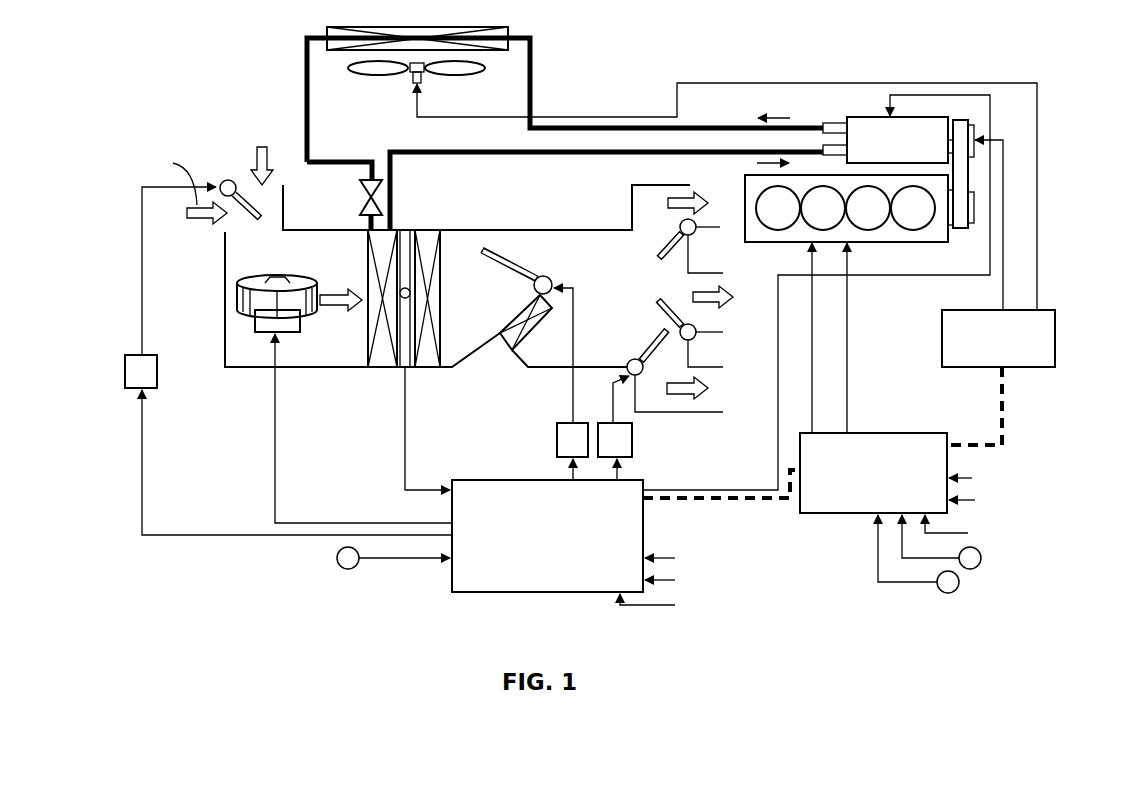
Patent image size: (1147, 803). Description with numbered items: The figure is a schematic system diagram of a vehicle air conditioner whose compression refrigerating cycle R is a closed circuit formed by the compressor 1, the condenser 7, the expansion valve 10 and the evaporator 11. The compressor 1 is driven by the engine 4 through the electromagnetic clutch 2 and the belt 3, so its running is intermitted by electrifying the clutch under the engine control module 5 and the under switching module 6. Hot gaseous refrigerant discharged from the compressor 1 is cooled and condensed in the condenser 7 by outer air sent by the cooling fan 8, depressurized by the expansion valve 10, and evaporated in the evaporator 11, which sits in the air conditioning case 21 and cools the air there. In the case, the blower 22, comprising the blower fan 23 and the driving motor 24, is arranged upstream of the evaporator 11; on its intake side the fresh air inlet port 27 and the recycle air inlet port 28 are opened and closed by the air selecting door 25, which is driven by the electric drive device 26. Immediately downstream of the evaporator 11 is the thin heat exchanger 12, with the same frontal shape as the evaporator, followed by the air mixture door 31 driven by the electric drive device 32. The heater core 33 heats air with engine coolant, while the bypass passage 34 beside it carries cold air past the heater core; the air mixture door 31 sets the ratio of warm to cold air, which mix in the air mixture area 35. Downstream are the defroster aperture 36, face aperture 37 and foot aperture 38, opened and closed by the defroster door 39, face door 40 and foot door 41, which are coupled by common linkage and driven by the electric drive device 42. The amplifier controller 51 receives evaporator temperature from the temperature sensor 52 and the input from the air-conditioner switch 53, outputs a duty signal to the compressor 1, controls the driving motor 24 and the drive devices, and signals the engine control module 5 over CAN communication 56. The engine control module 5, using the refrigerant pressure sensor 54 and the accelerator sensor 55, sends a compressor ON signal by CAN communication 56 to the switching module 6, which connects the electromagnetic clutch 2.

The compression refrigerating cycle of vehicle air conditioner R is at (541, 69).
The compressor 1 is at (873, 127).
The electromagnetic clutch 2 is at (955, 120).
The belt 3 is at (959, 228).
The engine 4 is at (866, 244).
The engine control module 5 is at (922, 440).
The under switching module 6 is at (952, 325).
The condenser 7 is at (493, 42).
The cooling fan 8 is at (385, 72).
The expansion valve 10 is at (358, 201).
The evaporator 11 is at (382, 360).
The heat exchanger 12 is at (430, 360).
The air conditioning case 21 is at (481, 230).
The blower 22 is at (244, 328).
The blower fan 23 is at (297, 283).
The driving motor 24 is at (295, 325).
The air selecting door 25 is at (242, 215).
The electric drive device 26 is at (150, 375).
The fresh air inlet port 27 is at (247, 182).
The recycle air inlet port 28 is at (225, 222).
The air mixture door 31 is at (517, 276).
The electric drive device 32 is at (580, 428).
The heater core 33 is at (507, 343).
The bypass passage 34 is at (542, 255).
The air mixture area 35 is at (585, 262).
The defroster aperture 36 is at (650, 233).
The face aperture 37 is at (690, 294).
The foot aperture 38 is at (665, 368).
The defroster door 39 is at (665, 244).
The face door 40 is at (663, 315).
The foot door 41 is at (655, 340).
The electric drive device 42 is at (625, 445).
The amplifier controller 51 is at (473, 480).
The temperature sensor 52 is at (412, 229).
The air-conditioner switch 53 is at (336, 558).
The refrigerant pressure sensor 54 is at (975, 568).
The accelerator sensor 55 is at (960, 583).
The CAN communication 56 is at (1005, 410).